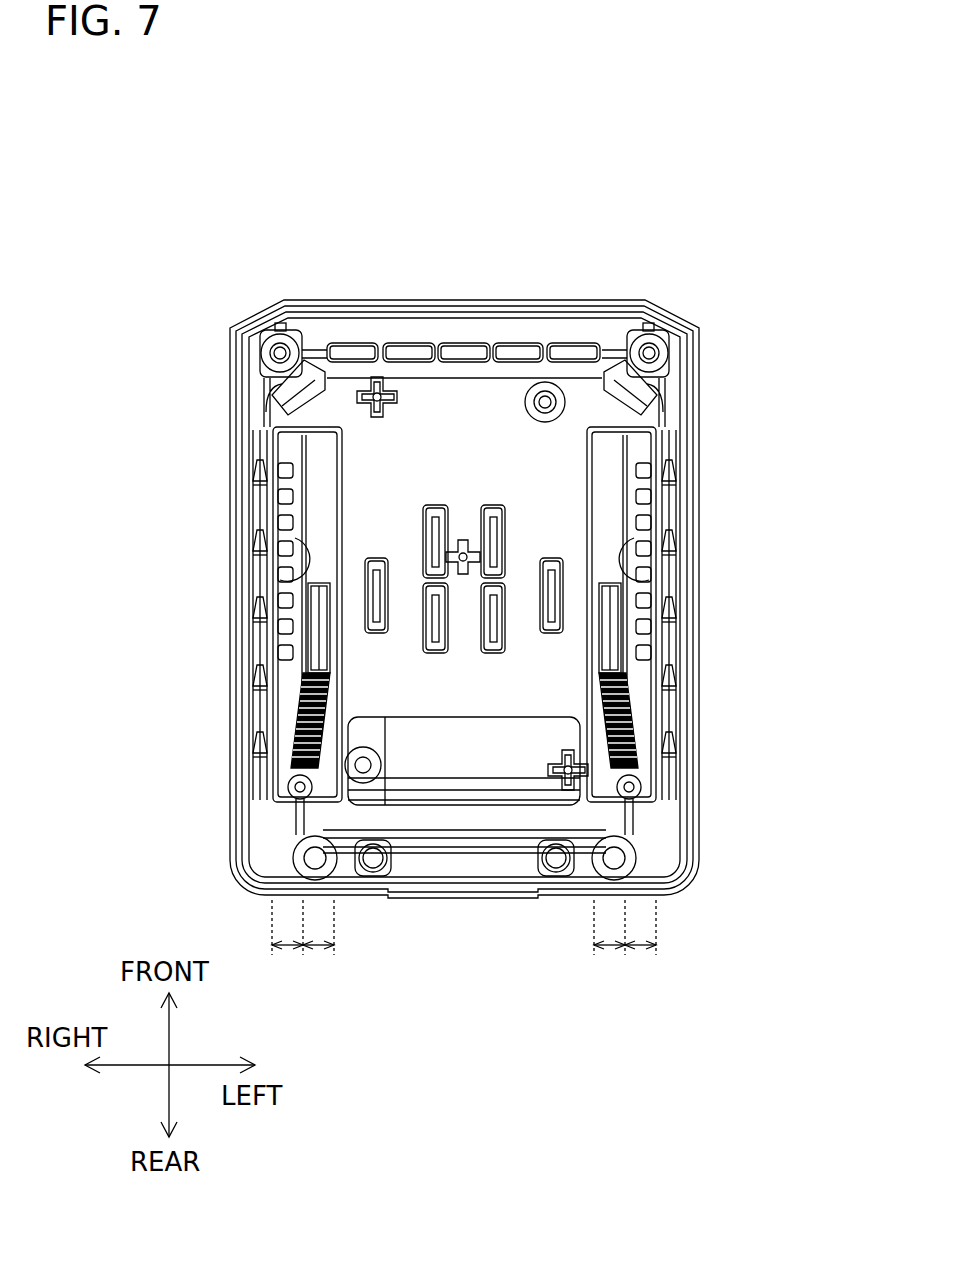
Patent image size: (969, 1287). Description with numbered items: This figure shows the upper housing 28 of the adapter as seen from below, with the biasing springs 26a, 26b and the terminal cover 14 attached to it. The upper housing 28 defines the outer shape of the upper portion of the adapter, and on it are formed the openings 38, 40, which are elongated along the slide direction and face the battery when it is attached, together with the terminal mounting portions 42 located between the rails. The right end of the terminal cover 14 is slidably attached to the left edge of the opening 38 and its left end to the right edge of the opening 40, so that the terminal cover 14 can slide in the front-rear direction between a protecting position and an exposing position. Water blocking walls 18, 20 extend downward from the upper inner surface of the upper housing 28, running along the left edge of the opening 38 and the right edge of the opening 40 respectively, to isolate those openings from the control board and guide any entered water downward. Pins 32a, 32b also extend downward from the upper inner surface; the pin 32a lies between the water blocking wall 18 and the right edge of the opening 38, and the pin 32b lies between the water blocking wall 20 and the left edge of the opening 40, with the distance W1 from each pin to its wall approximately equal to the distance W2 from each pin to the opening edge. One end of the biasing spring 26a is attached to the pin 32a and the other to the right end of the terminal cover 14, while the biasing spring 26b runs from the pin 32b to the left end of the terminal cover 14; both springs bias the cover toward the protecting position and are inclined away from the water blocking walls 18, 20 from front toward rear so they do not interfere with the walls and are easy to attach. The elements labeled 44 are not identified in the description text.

The terminal cover 14 is at (283, 650).
The water blocking wall 18 is at (333, 522).
The water blocking wall 20 is at (600, 520).
The biasing spring 26a is at (300, 745).
The biasing spring 26b is at (630, 730).
The upper housing 28 is at (598, 405).
The pin 32a is at (290, 800).
The pin 32b is at (638, 795).
The opening 38 is at (287, 593).
The opening 40 is at (640, 583).
The terminal mounting portions 42 is at (551, 560).
The fastening screw 44 is at (362, 390).
The distance W1 is at (320, 952).
The distance W2 is at (285, 952).